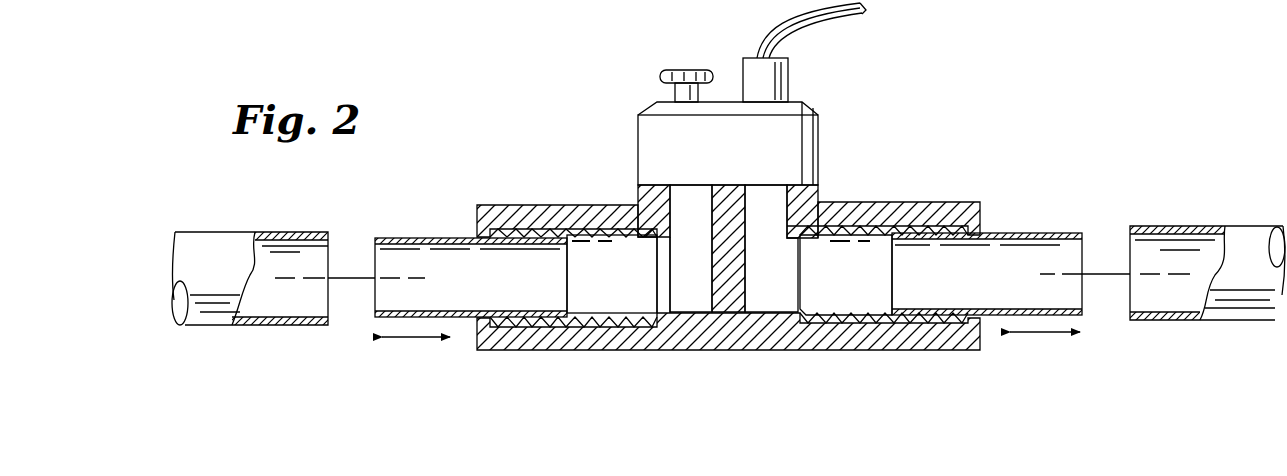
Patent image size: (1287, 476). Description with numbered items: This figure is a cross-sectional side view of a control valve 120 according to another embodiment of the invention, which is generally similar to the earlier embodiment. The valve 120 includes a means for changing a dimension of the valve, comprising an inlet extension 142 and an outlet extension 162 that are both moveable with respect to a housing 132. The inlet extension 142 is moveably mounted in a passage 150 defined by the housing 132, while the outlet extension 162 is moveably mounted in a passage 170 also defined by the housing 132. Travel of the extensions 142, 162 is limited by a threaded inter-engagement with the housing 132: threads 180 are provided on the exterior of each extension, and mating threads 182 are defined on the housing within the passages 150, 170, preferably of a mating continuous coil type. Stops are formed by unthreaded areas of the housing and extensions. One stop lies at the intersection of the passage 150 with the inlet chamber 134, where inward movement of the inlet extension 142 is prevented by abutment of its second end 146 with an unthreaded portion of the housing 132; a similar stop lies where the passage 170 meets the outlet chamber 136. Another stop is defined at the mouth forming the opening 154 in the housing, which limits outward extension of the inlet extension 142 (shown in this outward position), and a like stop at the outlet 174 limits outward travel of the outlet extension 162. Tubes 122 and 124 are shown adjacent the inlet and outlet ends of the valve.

The control valve 120 is at (867, 104).
The first tube 122 is at (272, 219).
The second tube 124 is at (1198, 222).
The housing 132 is at (905, 202).
The inlet chamber 134 is at (668, 289).
The outlet chamber 136 is at (752, 289).
The inlet extension 142 is at (397, 238).
The second end 146 is at (581, 305).
The passage 150 is at (587, 289).
The opening 154 is at (371, 319).
The outlet extension 162 is at (1055, 233).
The passage 170 is at (828, 289).
The outlet 174 is at (993, 231).
The threads 180 is at (543, 230).
The mating threads 182 is at (594, 228).